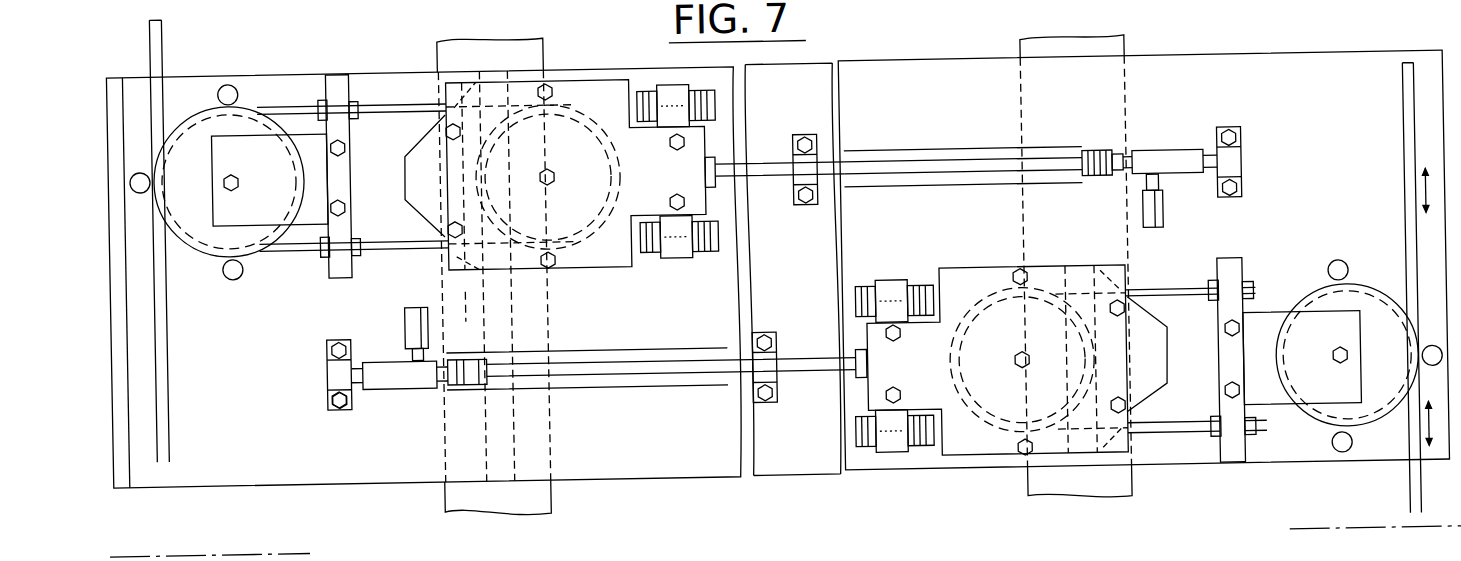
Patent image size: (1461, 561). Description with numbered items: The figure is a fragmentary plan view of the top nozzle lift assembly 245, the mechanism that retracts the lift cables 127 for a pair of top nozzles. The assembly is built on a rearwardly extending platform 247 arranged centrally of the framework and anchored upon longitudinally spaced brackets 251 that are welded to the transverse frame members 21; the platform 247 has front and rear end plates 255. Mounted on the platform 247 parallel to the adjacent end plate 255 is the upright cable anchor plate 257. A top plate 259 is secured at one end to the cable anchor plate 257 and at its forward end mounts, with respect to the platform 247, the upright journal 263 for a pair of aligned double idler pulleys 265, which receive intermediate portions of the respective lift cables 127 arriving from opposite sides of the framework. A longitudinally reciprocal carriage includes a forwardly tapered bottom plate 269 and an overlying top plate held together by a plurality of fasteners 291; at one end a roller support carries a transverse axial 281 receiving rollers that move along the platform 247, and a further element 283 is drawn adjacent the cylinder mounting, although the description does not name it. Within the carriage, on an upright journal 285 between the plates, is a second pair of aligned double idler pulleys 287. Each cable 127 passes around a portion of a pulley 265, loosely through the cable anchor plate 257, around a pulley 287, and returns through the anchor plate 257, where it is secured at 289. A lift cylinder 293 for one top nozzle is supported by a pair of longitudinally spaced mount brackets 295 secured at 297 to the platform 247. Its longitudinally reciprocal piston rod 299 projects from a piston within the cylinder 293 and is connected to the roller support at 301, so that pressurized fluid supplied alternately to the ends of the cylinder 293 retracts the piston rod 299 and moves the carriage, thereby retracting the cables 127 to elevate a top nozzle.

The transverse frame members 21 is at (506, 509).
The lift cables 127 is at (157, 58).
The top nozzle lift assembly 245 is at (889, 476).
The platform 247 is at (637, 479).
The brackets 251 is at (506, 334).
The end plates 255 is at (119, 480).
The cable anchor plate 257 is at (1235, 472).
The top plate 259 is at (1331, 368).
The upright journal 263 is at (1331, 381).
The double idler pulleys 265 is at (1378, 277).
The bottom plate 269 is at (1123, 432).
The transverse axial 281 is at (887, 294).
The pillow block 283 is at (834, 347).
The upright journal 285 is at (1014, 381).
The double idler pulleys 287 is at (968, 314).
The cable securing point 289 is at (1252, 300).
The fasteners 291 is at (1015, 468).
The lift cylinder 293 is at (967, 170).
The mount brackets 295 is at (320, 388).
The bracket securing point 297 is at (331, 413).
The piston rod 299 is at (796, 382).
The piston rod connection 301 is at (862, 379).